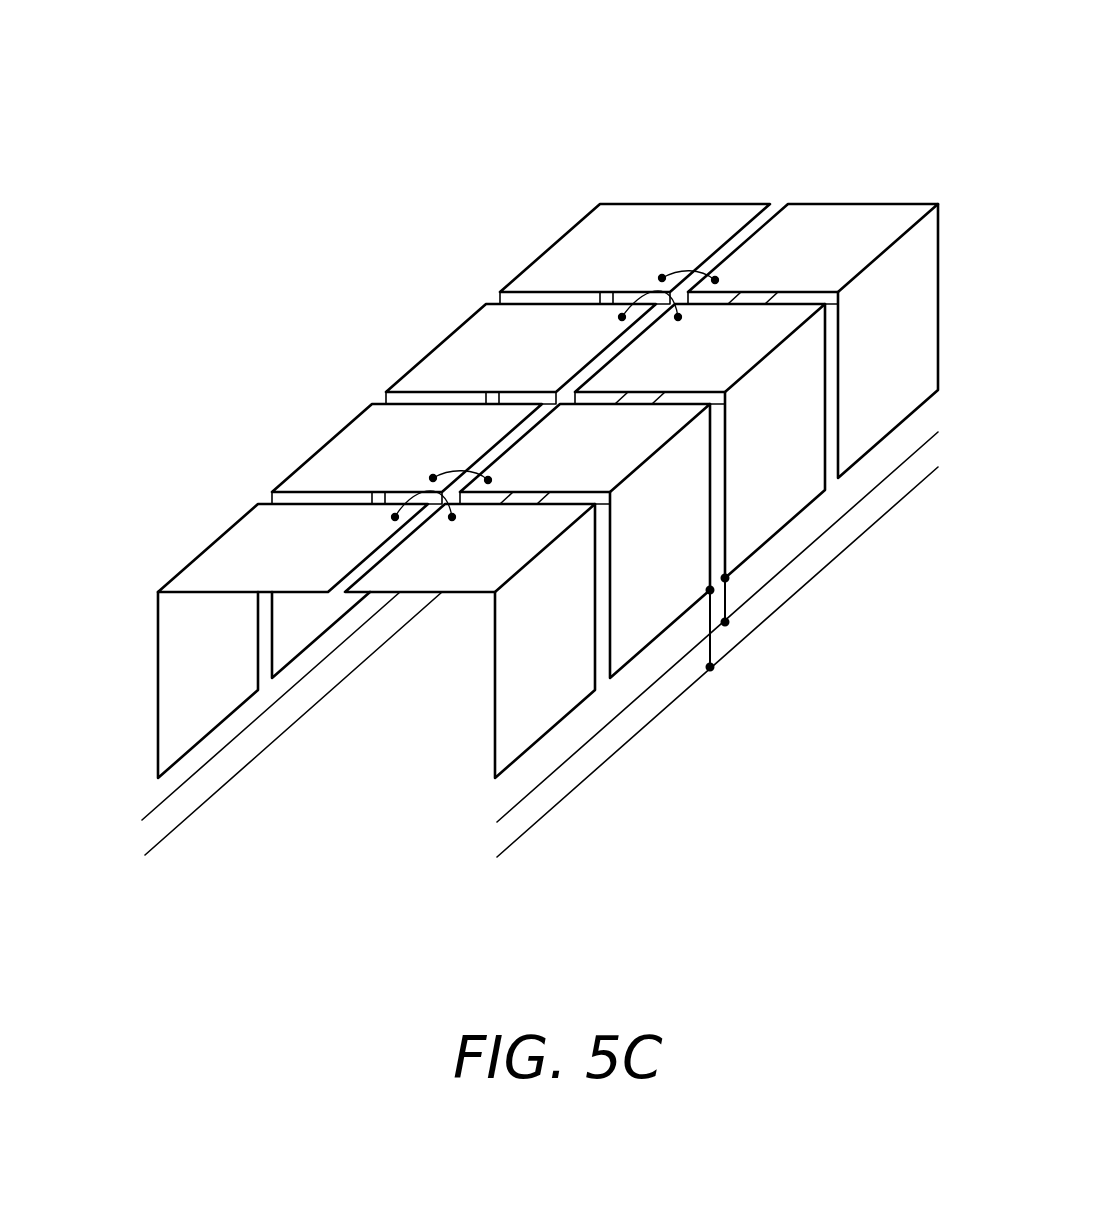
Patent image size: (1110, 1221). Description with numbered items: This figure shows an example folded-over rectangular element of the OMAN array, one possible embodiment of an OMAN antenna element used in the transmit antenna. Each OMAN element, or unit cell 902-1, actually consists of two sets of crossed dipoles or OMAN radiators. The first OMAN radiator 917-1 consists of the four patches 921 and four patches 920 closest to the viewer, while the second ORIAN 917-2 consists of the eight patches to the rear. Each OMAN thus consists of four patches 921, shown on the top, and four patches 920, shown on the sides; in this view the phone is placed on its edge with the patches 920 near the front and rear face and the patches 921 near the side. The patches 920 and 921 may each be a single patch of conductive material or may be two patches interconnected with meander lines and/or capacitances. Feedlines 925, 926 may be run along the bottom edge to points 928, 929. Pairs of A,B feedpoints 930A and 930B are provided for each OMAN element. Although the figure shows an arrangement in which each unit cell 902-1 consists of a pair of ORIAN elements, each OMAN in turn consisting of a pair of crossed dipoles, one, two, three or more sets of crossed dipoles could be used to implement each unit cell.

The unit cell 902-1 is at (563, 138).
The first OMAN radiator 917-1 is at (200, 672).
The second ORIAN 917-2 is at (658, 187).
The patches 921 is at (580, 238).
The patches 920 is at (850, 470).
The A feedpoint 930A is at (678, 317).
The B feedpoint 930B is at (715, 280).
The point 928 is at (710, 590).
The point 929 is at (725, 578).
The feedline 925 is at (510, 845).
The feedline 926 is at (165, 837).